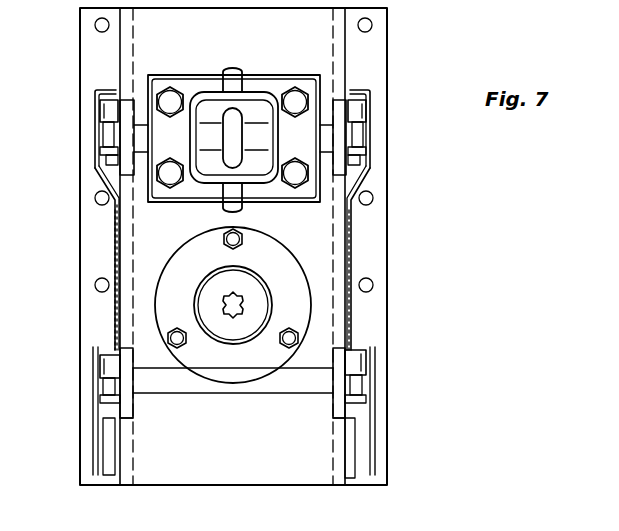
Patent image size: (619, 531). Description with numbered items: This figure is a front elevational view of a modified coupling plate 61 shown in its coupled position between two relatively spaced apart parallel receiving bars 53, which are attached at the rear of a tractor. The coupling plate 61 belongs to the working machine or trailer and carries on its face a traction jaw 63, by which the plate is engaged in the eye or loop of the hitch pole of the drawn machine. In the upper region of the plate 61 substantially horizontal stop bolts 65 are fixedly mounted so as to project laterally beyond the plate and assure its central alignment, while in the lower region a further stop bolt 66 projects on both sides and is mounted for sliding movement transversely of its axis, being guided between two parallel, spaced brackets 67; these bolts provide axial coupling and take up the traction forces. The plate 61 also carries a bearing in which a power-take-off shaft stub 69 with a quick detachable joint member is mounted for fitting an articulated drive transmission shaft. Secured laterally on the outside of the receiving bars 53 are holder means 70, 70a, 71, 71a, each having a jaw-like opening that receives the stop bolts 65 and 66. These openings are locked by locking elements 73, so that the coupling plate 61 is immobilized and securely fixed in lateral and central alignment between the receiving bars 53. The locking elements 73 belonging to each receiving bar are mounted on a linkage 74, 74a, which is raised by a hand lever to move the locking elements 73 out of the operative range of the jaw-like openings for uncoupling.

The coupling plate 61 is at (318, 28).
The receiving bars 53 is at (80, 60).
The traction jaw 63 is at (265, 163).
The stop bolts 65 is at (145, 150).
The stop bolt 66 is at (177, 387).
The brackets 67 is at (135, 410).
The power-take-off shaft stub 69 is at (220, 305).
The holder means 70 is at (110, 355).
The holder means 70a is at (358, 357).
The holder means 71 is at (112, 115).
The holder means 71a is at (355, 112).
The locking elements 73 is at (110, 140).
The linkage 74 is at (112, 247).
The linkage 74a is at (352, 250).